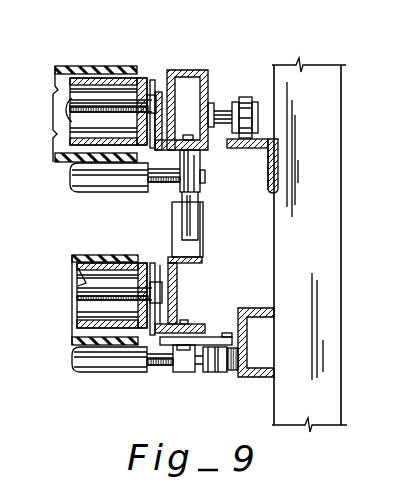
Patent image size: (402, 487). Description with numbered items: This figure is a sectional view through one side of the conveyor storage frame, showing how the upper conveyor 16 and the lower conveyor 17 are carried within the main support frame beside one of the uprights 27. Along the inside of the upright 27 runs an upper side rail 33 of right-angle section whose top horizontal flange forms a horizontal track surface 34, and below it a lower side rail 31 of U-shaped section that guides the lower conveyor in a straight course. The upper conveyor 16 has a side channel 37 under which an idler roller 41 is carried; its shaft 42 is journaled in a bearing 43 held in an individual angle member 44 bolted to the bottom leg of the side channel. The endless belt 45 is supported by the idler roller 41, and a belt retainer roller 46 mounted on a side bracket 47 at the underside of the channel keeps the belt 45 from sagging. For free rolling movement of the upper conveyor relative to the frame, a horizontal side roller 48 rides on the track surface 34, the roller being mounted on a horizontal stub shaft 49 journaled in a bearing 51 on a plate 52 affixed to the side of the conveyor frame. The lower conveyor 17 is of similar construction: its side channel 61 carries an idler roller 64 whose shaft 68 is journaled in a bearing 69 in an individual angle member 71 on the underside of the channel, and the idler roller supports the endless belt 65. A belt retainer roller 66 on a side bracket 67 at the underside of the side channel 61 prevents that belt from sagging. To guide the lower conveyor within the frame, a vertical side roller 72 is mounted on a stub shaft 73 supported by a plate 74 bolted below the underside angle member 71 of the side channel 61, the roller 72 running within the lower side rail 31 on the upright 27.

The upper conveyor 16 is at (67, 60).
The lower conveyor 17 is at (90, 246).
The upright 27 is at (343, 242).
The lower side rail 31 is at (266, 305).
The upper side rail 33 is at (277, 178).
The horizontal track surface 34 is at (267, 138).
The side channel 37 is at (182, 69).
The idler roller 41 is at (151, 78).
The shaft 42 is at (72, 118).
The bearing 43 is at (158, 91).
The angle member 44 is at (156, 188).
The endless belt 45 is at (97, 66).
The belt retainer roller 46 is at (82, 181).
The side bracket 47 is at (203, 188).
The horizontal side roller 48 is at (250, 96).
The horizontal stub shaft 49 is at (218, 104).
The bearing 51 is at (194, 122).
The plate 52 is at (213, 82).
The side channel 61 is at (182, 278).
The idler roller 64 is at (90, 273).
The endless belt 65 is at (77, 258).
The belt retainer roller 66 is at (97, 372).
The side bracket 67 is at (182, 362).
The shaft 68 is at (99, 296).
The bearing 69 is at (156, 283).
The angle member 71 is at (163, 362).
The vertical side roller 72 is at (213, 364).
The stub shaft 73 is at (232, 344).
The plate 74 is at (209, 337).